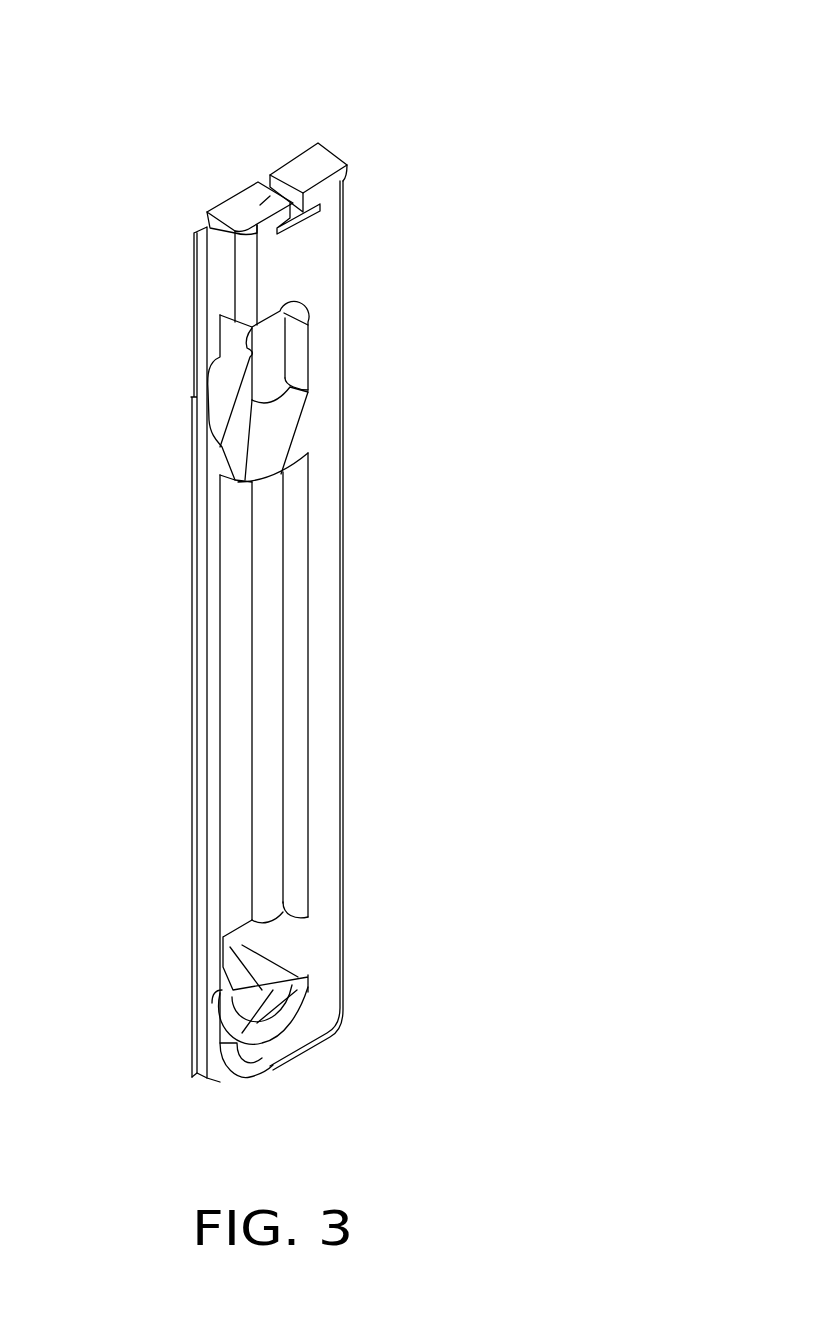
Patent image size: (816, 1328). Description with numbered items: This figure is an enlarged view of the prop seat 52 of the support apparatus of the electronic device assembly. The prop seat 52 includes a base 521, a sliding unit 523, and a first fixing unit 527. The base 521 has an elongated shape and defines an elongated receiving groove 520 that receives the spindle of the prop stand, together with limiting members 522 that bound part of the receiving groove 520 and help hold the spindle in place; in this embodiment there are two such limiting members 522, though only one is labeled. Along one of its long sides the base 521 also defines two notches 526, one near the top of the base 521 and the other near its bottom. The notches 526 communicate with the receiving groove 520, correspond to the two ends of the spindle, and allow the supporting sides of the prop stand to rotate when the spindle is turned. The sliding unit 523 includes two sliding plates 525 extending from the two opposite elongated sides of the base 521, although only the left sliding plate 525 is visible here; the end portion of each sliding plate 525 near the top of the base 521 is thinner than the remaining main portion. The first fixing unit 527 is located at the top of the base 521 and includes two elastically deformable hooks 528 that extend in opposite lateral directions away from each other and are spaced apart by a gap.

The prop seat 52 is at (162, 33).
The receiving groove 520 is at (268, 805).
The base 521 is at (307, 260).
The limiting member 522 is at (272, 442).
The sliding unit 523 is at (210, 335).
The sliding plate 525 is at (203, 623).
The notch 526 is at (270, 353).
The first fixing unit 527 is at (362, 78).
The hook 528 is at (245, 208).